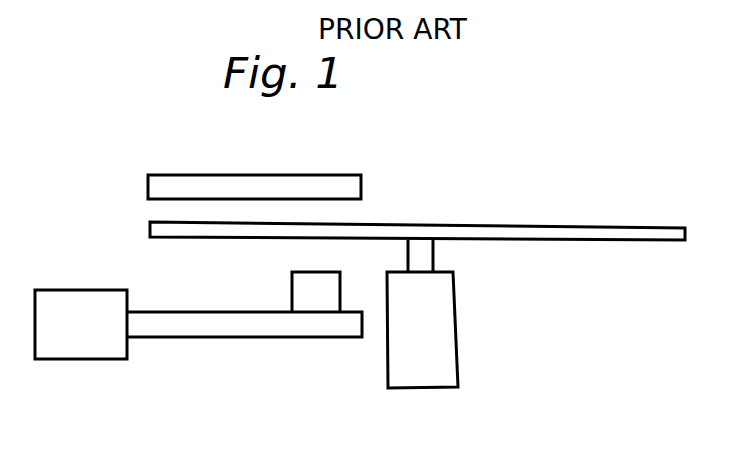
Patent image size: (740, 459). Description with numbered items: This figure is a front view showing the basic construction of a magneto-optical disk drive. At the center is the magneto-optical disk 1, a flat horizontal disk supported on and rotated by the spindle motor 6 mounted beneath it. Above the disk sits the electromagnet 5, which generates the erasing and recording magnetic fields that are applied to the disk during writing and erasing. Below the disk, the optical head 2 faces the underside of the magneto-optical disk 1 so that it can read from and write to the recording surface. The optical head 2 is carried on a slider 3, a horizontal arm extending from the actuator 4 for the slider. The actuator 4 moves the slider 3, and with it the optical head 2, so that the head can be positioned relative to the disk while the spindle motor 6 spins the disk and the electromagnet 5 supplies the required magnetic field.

The magneto-optical disk 1 is at (502, 223).
The optical head 2 is at (289, 284).
The slider 3 is at (163, 338).
The actuator for the slider 4 is at (78, 362).
The electromagnet 5 is at (331, 177).
The spindle motor 6 is at (459, 330).